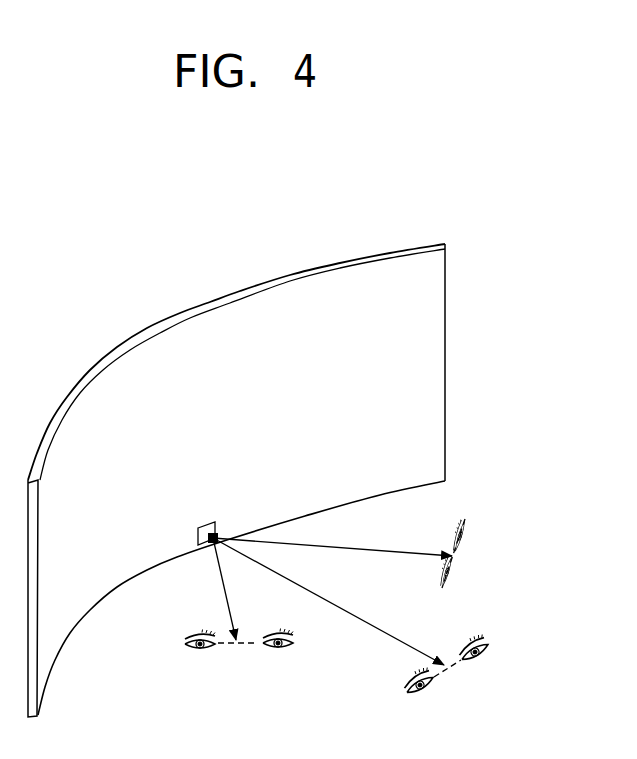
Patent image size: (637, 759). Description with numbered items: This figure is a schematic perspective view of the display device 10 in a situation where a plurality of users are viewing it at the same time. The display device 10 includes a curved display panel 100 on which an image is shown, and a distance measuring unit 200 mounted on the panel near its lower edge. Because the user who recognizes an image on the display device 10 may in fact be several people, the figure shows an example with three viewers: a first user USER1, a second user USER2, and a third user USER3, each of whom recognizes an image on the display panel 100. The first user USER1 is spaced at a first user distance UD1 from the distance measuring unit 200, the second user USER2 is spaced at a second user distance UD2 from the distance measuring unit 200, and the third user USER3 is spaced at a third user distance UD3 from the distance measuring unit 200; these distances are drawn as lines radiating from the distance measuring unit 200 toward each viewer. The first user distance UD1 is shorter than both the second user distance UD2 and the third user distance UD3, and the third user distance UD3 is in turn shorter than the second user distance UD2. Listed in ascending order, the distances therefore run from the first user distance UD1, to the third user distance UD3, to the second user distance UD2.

The display device 10 is at (516, 202).
The display panel 100 is at (447, 365).
The distance measuring unit 200 is at (205, 520).
The first user distance UD1 is at (210, 589).
The second user distance UD2 is at (328, 601).
The third user distance UD3 is at (332, 537).
The first user USER1 is at (199, 652).
The second user USER2 is at (478, 638).
The third user USER3 is at (466, 521).